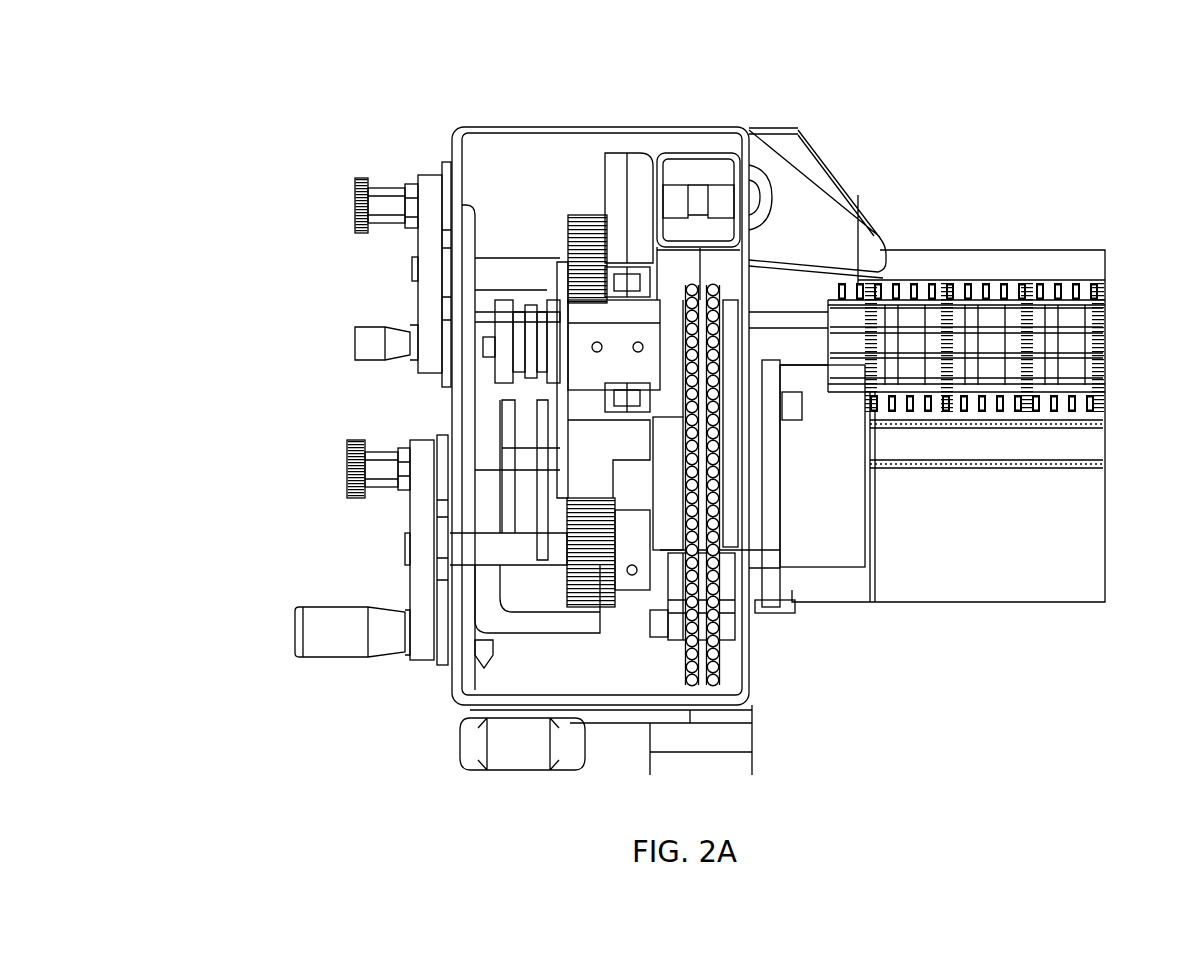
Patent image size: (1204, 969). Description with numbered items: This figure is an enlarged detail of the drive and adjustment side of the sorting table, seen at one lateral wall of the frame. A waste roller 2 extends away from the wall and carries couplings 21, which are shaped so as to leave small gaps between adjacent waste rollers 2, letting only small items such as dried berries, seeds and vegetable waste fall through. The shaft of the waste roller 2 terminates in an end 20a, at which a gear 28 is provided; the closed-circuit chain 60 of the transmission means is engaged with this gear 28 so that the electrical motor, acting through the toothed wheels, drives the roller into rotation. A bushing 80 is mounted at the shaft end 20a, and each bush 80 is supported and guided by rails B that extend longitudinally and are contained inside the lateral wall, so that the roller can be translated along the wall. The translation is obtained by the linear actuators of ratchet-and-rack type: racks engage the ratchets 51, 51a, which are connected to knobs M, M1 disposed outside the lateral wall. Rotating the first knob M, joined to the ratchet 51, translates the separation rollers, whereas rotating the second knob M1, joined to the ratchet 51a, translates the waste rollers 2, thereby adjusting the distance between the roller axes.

The waste rollers 2 is at (1082, 413).
The ends of the shafts 20a is at (785, 342).
The couplings 21 is at (870, 285).
The gears 28 is at (749, 262).
The ratchet 51 is at (585, 612).
The ratchet 51a is at (590, 230).
The chain 60 is at (712, 578).
The bushing 80 is at (636, 327).
The rails B is at (631, 268).
The first knob M is at (355, 580).
The second knob M1 is at (360, 283).